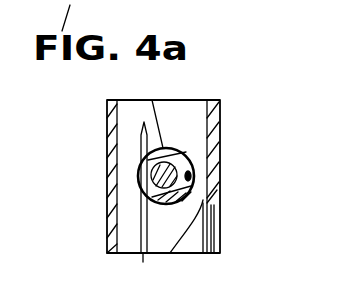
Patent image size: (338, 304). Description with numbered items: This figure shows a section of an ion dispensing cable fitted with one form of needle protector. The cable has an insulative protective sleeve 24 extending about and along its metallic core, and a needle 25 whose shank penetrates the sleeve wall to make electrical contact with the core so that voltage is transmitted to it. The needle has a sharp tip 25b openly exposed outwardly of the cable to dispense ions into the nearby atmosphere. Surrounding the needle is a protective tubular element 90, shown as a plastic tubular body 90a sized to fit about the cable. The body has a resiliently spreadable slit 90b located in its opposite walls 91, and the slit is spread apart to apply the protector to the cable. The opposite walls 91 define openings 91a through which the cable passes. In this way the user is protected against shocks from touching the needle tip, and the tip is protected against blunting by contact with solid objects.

The protective sleeve 24 is at (186, 154).
The needle 25 is at (141, 212).
The sharp tip 25b is at (143, 262).
The tubular element 90 is at (232, 115).
The plastic tubular body 90a is at (107, 122).
The slit 90b is at (158, 117).
The opposite wall 91 is at (133, 132).
The opening 91a is at (189, 181).